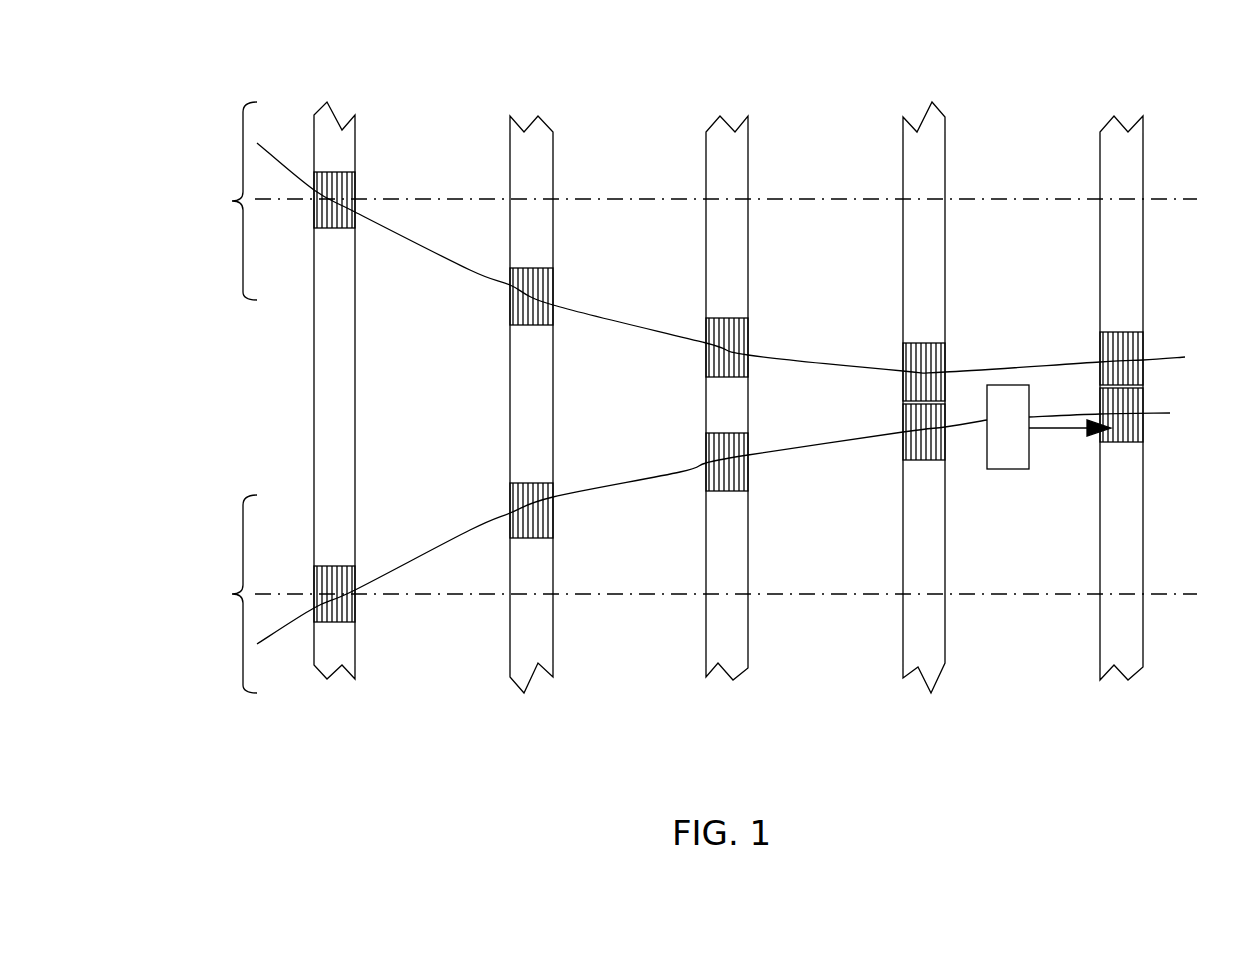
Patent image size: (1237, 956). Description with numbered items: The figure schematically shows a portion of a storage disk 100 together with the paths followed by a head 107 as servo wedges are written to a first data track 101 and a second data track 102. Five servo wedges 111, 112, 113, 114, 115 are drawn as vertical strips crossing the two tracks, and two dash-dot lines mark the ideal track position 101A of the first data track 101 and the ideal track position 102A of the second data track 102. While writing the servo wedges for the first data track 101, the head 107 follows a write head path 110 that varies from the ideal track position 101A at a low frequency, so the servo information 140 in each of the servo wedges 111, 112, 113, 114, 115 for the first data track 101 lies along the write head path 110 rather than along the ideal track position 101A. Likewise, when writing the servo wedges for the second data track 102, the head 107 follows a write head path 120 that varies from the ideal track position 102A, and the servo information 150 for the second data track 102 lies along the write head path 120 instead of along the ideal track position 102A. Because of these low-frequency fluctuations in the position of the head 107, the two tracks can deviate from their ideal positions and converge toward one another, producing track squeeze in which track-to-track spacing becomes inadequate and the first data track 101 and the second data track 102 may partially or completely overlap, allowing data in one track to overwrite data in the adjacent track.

The storage disk 100 is at (502, 68).
The first data track 101 is at (232, 201).
The ideal track position 101A is at (387, 199).
The second data track 102 is at (232, 594).
The ideal track position 102A is at (387, 594).
The head 107 is at (1032, 450).
The write head path 110 is at (470, 270).
The write head path 120 is at (477, 527).
The servo wedge 111 is at (332, 695).
The servo wedge 112 is at (532, 695).
The servo wedge 113 is at (725, 695).
The servo wedge 114 is at (922, 695).
The servo wedge 115 is at (1119, 695).
The servo information 140 is at (530, 268).
The servo information 150 is at (335, 566).